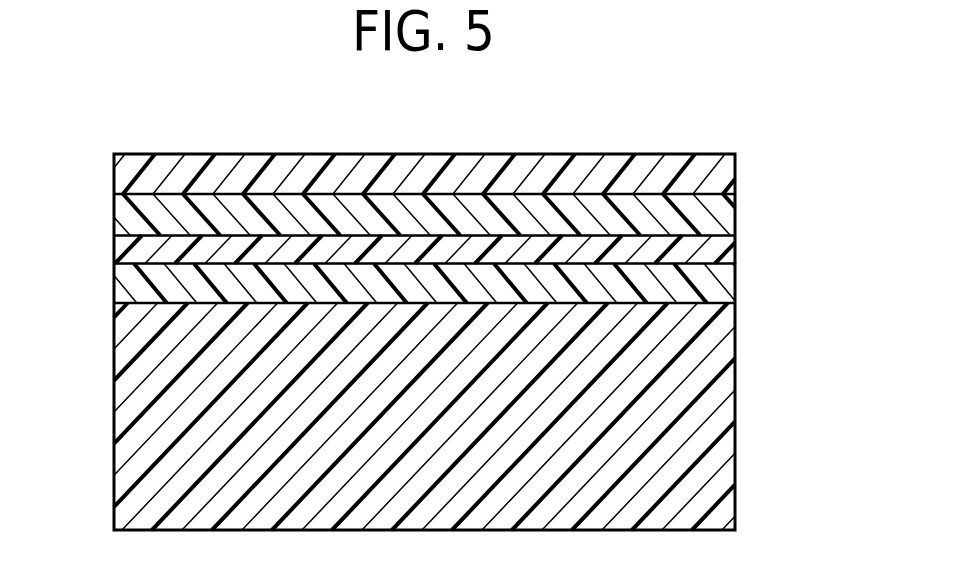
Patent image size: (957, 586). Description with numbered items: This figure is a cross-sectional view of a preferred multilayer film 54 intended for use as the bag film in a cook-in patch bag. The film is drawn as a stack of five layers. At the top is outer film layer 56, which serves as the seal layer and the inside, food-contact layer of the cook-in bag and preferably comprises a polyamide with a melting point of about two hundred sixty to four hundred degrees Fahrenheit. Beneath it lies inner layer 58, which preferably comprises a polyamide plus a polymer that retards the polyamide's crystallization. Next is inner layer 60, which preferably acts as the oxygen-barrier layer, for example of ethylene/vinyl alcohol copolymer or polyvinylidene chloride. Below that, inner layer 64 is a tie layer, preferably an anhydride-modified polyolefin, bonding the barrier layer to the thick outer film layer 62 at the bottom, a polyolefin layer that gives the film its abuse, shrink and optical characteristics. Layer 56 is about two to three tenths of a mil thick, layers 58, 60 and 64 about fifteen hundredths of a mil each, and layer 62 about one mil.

The multilayer film 54 is at (256, 130).
The outer film layer 56 is at (119, 176).
The inner layer 58 is at (723, 222).
The inner layer 60 is at (118, 248).
The inner layer 64 is at (712, 288).
The outer film layer 62 is at (720, 409).